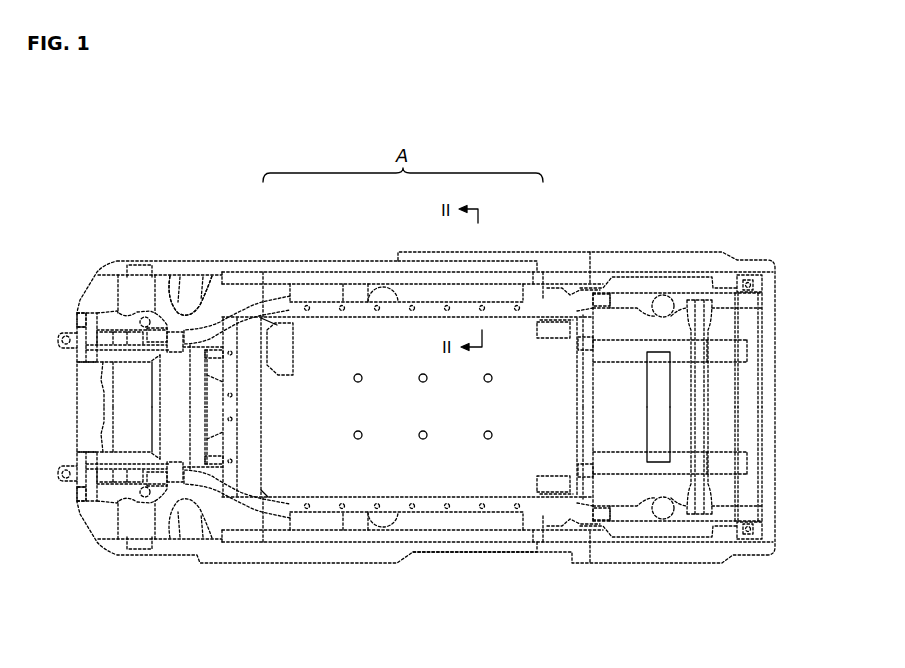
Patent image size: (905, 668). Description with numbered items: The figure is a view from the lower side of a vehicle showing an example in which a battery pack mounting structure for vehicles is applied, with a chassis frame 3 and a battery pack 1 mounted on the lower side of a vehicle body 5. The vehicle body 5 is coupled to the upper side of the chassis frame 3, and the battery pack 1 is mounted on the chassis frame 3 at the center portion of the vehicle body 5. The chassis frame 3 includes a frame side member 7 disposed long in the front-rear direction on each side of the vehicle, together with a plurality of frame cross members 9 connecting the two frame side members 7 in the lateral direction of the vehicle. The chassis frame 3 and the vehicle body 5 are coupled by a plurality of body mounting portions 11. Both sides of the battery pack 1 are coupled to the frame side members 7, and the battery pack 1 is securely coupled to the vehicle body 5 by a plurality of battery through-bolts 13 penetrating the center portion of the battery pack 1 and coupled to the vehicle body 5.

The battery pack 1 is at (497, 485).
The chassis frame 3 is at (243, 300).
The vehicle body 5 is at (182, 296).
The frame side member 7 is at (278, 292).
The frame cross member 9 is at (590, 400).
The body mounting portion 11 is at (95, 493).
The battery through-bolt 13 is at (488, 440).